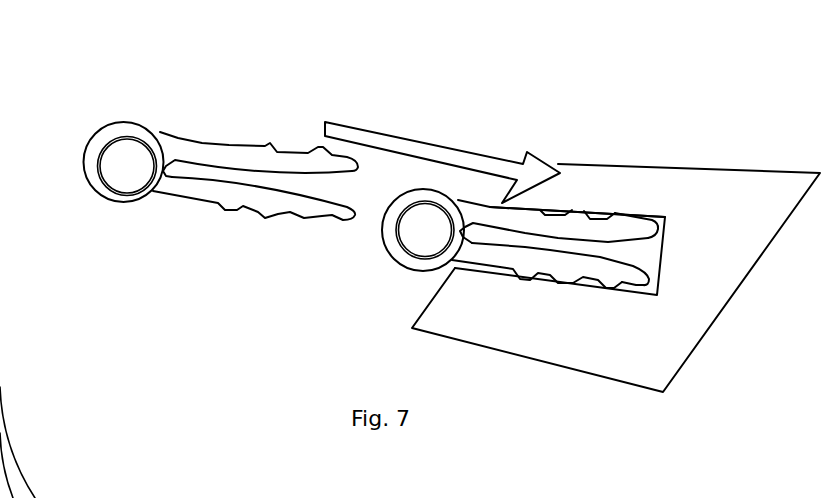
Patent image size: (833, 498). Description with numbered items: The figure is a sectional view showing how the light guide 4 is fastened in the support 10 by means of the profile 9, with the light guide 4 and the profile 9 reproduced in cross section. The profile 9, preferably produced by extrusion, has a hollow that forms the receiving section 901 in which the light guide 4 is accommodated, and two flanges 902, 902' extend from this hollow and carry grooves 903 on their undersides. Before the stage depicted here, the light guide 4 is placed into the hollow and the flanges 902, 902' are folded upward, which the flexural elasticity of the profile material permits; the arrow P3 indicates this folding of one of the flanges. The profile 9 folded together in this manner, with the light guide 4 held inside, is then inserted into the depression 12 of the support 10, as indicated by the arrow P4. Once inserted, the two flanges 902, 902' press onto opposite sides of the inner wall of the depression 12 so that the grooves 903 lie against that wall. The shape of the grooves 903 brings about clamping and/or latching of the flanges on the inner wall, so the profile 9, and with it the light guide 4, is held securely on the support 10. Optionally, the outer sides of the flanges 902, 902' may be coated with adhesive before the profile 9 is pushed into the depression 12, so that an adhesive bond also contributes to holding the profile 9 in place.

The profile 9 is at (201, 140).
The receiving section 901 is at (110, 126).
The flange 902 is at (427, 153).
The flange 902' is at (479, 252).
The grooves 903 is at (320, 147).
The light guide 4 is at (127, 177).
The support 10 is at (750, 183).
The depression 12 is at (650, 255).
The arrow P4 is at (432, 130).
The arrow P3 is at (10, 400).